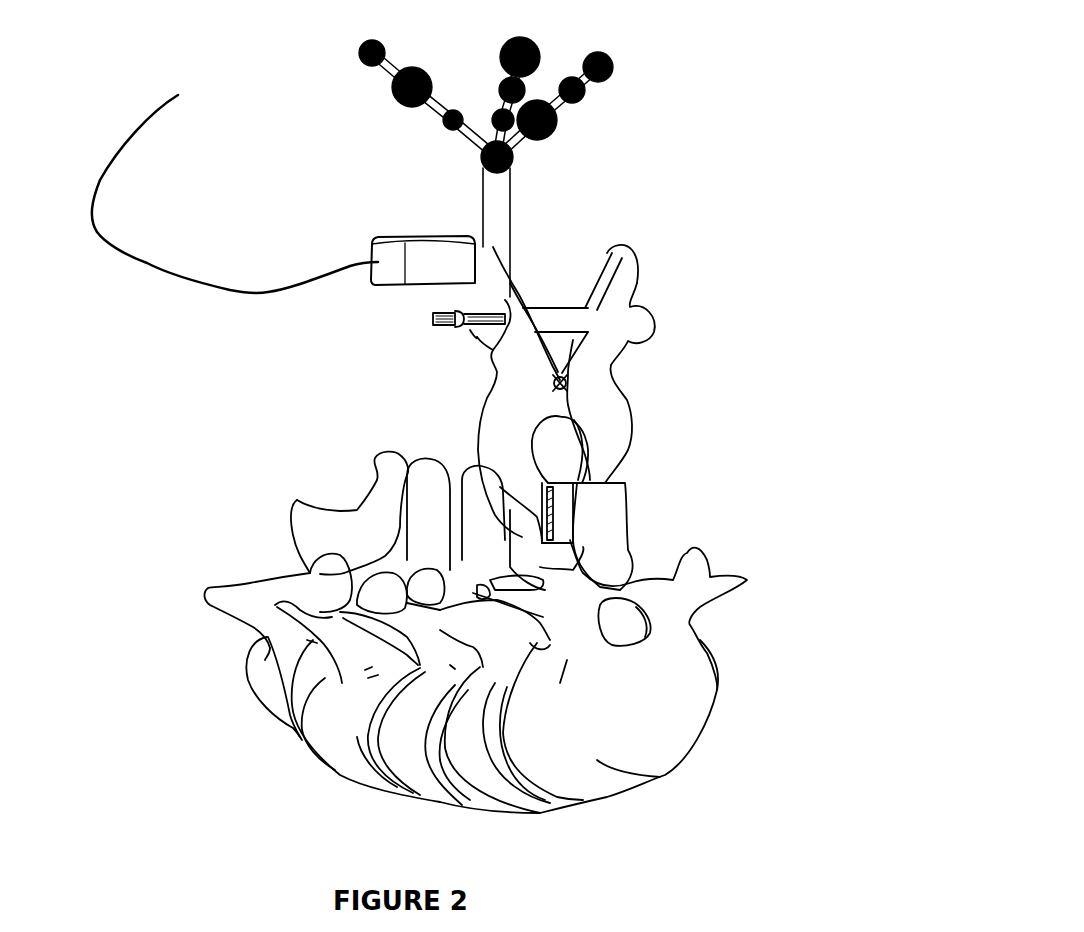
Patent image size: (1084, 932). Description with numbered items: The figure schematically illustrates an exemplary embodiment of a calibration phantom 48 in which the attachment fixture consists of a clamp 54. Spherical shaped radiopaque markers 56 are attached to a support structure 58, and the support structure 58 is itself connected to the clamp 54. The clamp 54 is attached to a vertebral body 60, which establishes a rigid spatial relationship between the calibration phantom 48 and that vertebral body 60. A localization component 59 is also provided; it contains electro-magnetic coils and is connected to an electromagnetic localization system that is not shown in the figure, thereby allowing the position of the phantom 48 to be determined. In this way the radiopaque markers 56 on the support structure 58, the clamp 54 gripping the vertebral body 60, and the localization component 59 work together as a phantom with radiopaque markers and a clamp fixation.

The calibration phantom 48 is at (662, 75).
The clamp 54 is at (613, 418).
The spherical shaped radiopaque markers 56 is at (395, 108).
The support structure 58 is at (503, 200).
The localization component 59 is at (433, 265).
The vertebral body 60 is at (350, 525).